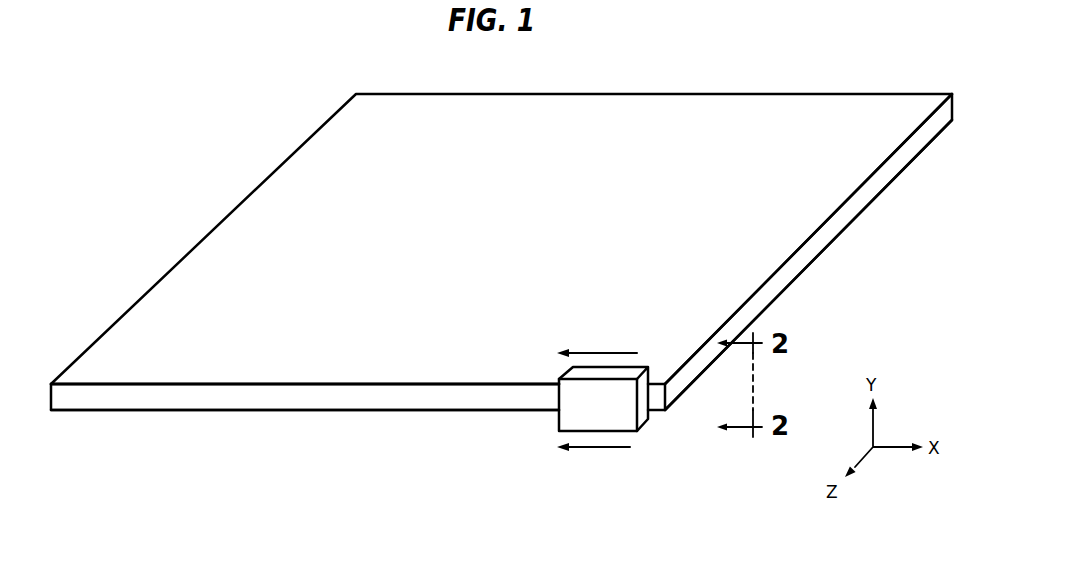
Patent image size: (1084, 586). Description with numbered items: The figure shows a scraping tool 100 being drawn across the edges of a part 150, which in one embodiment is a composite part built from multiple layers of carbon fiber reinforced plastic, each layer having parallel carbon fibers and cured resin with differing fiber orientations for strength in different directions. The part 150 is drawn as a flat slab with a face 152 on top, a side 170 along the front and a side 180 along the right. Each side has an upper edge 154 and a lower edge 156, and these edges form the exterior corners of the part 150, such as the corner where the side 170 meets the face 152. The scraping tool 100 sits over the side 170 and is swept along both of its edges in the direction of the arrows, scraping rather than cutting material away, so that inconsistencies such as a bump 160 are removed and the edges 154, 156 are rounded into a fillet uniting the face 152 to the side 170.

The scraping tool 100 is at (632, 371).
The part 150 is at (501, 250).
The face 152 is at (517, 183).
The upper edge 154 is at (408, 370).
The lower edge 156 is at (332, 424).
The bump 160 is at (337, 370).
The side 170 is at (190, 400).
The side 180 is at (867, 193).